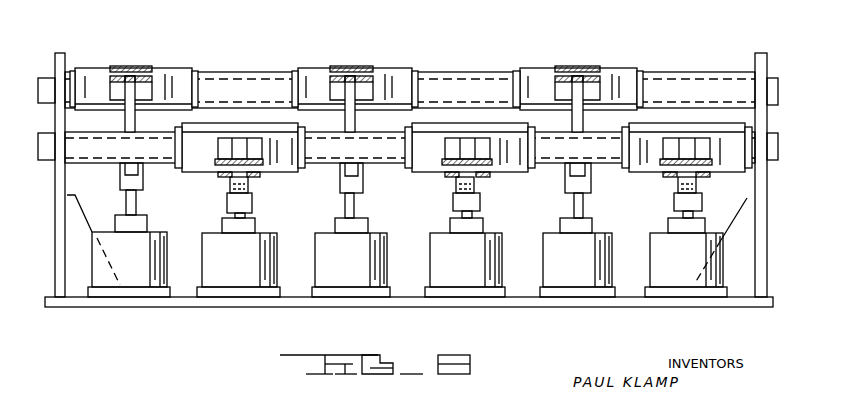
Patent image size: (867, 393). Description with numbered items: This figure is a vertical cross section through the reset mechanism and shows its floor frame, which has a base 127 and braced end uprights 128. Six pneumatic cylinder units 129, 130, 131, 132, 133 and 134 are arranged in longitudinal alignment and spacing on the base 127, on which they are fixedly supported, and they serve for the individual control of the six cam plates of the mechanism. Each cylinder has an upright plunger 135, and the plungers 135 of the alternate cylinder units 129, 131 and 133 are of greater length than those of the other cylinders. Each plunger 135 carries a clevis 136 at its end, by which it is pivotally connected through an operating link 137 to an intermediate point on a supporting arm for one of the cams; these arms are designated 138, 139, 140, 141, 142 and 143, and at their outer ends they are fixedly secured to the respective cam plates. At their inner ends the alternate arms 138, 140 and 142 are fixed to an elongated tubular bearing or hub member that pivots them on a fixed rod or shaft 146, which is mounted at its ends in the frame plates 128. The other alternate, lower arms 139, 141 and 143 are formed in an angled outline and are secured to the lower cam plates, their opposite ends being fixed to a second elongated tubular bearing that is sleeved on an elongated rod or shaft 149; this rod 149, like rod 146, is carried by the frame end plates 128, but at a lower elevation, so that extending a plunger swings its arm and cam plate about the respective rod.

The base 127 is at (202, 304).
The end uprights 128 is at (58, 282).
The cylinder unit 129 is at (160, 242).
The cylinder unit 130 is at (263, 243).
The cylinder unit 131 is at (380, 243).
The cylinder unit 132 is at (497, 243).
The cylinder unit 133 is at (606, 243).
The cylinder unit 134 is at (689, 278).
The upright plunger 135 is at (127, 200).
The clevis 136 is at (141, 185).
The operating link 137 is at (128, 118).
The supporting arm 138 is at (143, 66).
The supporting arm 139 is at (257, 175).
The supporting arm 140 is at (377, 54).
The supporting arm 141 is at (448, 165).
The supporting arm 142 is at (592, 67).
The supporting arm 143 is at (703, 177).
The fixed rod or shaft 146 is at (42, 78).
The rod or shaft 149 is at (47, 144).